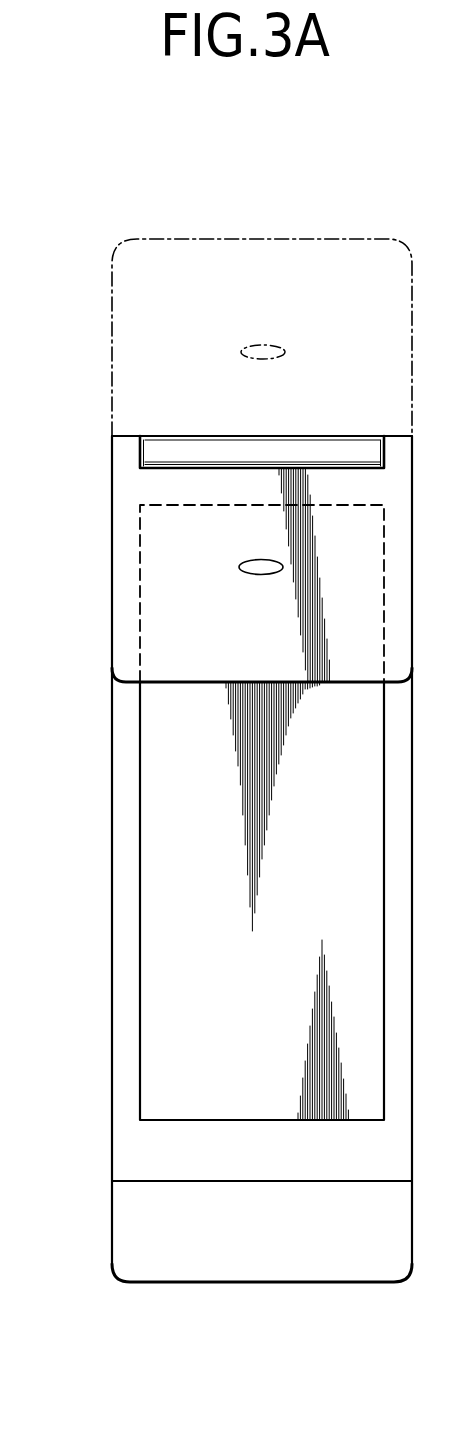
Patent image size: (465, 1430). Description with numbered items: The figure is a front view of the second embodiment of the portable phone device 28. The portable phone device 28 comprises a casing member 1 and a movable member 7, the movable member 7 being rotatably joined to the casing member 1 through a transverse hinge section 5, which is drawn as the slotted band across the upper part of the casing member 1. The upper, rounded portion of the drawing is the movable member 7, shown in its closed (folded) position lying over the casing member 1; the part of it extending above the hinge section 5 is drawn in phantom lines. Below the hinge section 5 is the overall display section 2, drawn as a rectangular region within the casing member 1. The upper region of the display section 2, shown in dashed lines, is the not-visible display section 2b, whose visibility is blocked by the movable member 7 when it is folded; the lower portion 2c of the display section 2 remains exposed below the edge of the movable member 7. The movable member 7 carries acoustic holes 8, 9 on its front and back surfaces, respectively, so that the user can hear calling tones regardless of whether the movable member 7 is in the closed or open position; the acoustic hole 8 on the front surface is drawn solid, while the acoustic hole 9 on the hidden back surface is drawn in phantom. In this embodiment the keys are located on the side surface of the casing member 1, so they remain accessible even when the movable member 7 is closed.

The portable phone device 28 is at (141, 207).
The casing member 1 is at (112, 860).
The display section 2 is at (127, 733).
The not-visible display section 2b is at (362, 558).
The lower portion of cleaning member 2c is at (368, 800).
The transverse hinge section 5 is at (123, 453).
The movable member 7 is at (298, 240).
The acoustic hole 8 is at (240, 567).
The acoustic hole 9 is at (243, 350).